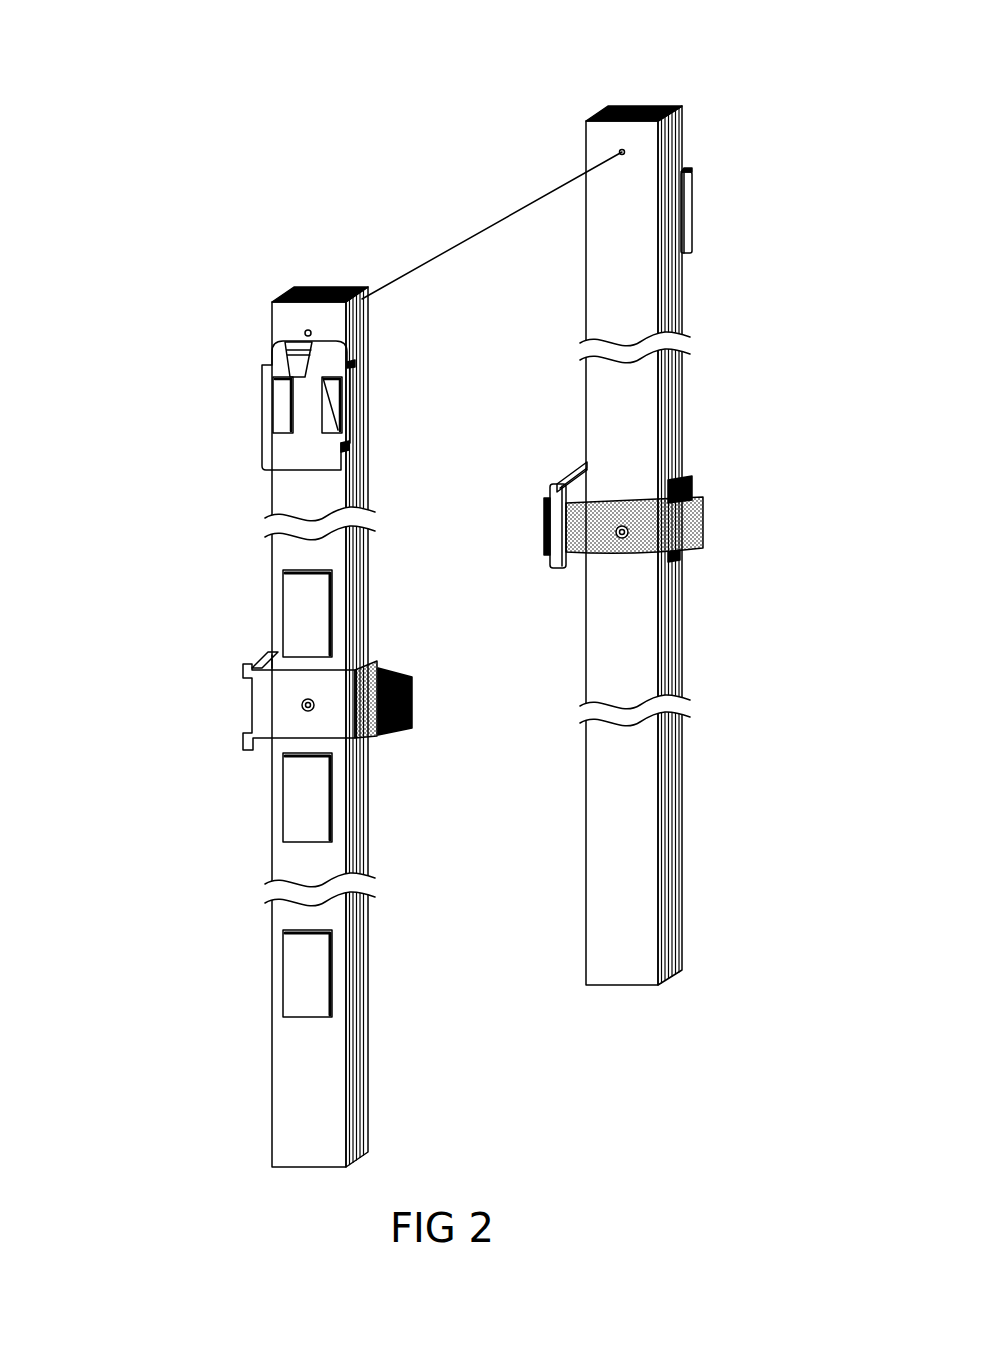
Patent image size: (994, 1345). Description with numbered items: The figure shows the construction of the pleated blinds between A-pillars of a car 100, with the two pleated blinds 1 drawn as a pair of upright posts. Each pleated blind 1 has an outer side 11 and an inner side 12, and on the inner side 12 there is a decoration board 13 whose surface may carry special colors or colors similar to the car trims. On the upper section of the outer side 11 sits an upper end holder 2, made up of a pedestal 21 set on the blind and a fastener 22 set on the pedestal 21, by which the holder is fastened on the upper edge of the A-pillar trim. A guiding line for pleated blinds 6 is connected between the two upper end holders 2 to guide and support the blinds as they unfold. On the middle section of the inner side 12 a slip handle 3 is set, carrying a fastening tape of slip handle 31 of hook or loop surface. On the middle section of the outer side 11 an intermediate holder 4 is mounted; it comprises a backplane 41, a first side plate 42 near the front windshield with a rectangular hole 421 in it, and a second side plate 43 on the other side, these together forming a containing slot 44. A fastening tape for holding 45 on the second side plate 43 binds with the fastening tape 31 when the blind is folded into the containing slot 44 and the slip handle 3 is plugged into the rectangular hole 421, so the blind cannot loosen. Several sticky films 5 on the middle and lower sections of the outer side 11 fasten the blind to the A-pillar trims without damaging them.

The pleated blinds between A-pillars of a car 100 is at (304, 198).
The pleated blind 1 is at (475, 629).
The outer side 11 is at (300, 312).
The inner side 12 is at (660, 388).
The decoration board 13 is at (625, 300).
The upper end holder 2 is at (469, 316).
The pedestal 21 is at (305, 462).
The fastener 22 is at (281, 346).
The slip handle 3 is at (602, 630).
The fastening tape of slip handle 31 is at (412, 716).
The intermediate holder 4 is at (473, 558).
The backplane 41 is at (275, 725).
The first side plate 42 is at (270, 656).
The rectangular hole 421 is at (570, 490).
The second side plate 43 is at (375, 665).
The containing slot 44 is at (683, 478).
The fastening tape for holding 45 is at (380, 672).
The sticky film 5 is at (274, 605).
The guiding line for pleated blinds 6 is at (493, 224).